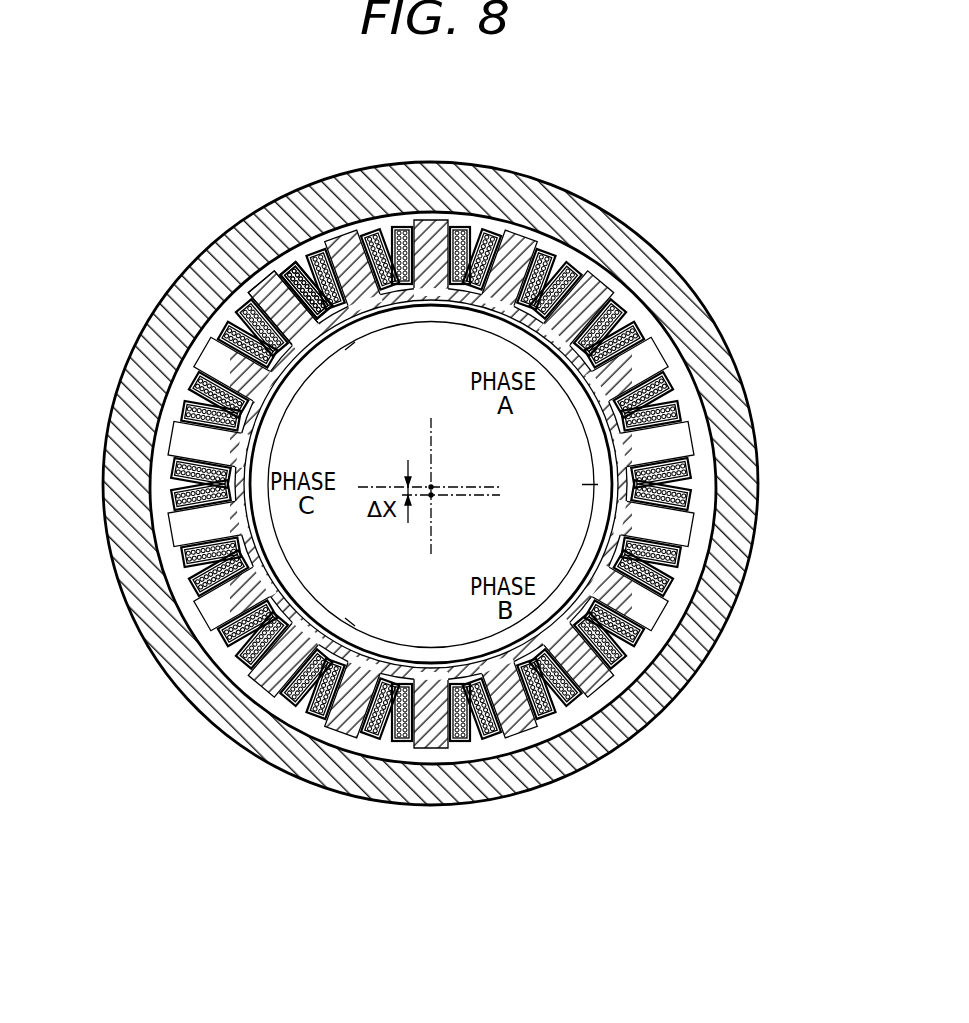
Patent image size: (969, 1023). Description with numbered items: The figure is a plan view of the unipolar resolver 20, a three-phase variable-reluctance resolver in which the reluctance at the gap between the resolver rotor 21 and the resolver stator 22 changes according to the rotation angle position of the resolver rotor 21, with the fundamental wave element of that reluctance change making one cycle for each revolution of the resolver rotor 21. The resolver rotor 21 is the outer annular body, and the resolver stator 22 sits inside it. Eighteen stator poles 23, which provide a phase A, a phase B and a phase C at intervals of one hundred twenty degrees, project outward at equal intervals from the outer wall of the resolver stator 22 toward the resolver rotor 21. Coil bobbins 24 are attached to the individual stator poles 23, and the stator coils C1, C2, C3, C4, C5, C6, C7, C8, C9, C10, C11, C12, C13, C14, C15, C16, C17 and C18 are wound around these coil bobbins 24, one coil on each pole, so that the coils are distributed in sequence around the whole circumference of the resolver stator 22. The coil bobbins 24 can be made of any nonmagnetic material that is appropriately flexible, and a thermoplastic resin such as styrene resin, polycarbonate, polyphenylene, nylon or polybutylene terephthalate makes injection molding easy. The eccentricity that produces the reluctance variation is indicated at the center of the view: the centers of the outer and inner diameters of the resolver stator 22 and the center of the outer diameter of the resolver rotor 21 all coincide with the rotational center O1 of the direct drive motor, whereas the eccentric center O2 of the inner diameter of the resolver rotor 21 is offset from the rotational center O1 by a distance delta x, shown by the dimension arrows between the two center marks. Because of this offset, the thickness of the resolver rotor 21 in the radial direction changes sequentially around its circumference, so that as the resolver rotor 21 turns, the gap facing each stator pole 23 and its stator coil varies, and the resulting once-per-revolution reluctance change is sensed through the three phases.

The unipolar resolver 20 is at (575, 128).
The resolver rotor 21 is at (218, 254).
The resolver stator 22 is at (263, 382).
The stator pole 23 is at (300, 272).
The coil bobbin 24 is at (262, 293).
The stator coil C1 is at (388, 242).
The stator coil C2 is at (474, 242).
The stator coil C3 is at (568, 256).
The stator coil C4 is at (642, 310).
The stator coil C5 is at (673, 397).
The stator coil C6 is at (677, 484).
The stator coil C7 is at (671, 570).
The stator coil C8 is at (626, 645).
The stator coil C9 is at (558, 701).
The stator coil C10 is at (476, 737).
The stator coil C11 is at (386, 737).
The stator coil C12 is at (307, 695).
The stator coil C13 is at (236, 645).
The stator coil C14 is at (179, 574).
The stator coil C15 is at (181, 484).
The stator coil C16 is at (191, 398).
The stator coil C17 is at (236, 323).
The stator coil C18 is at (303, 267).
The rotational center O1 is at (433, 487).
The eccentric center O2 is at (433, 495).